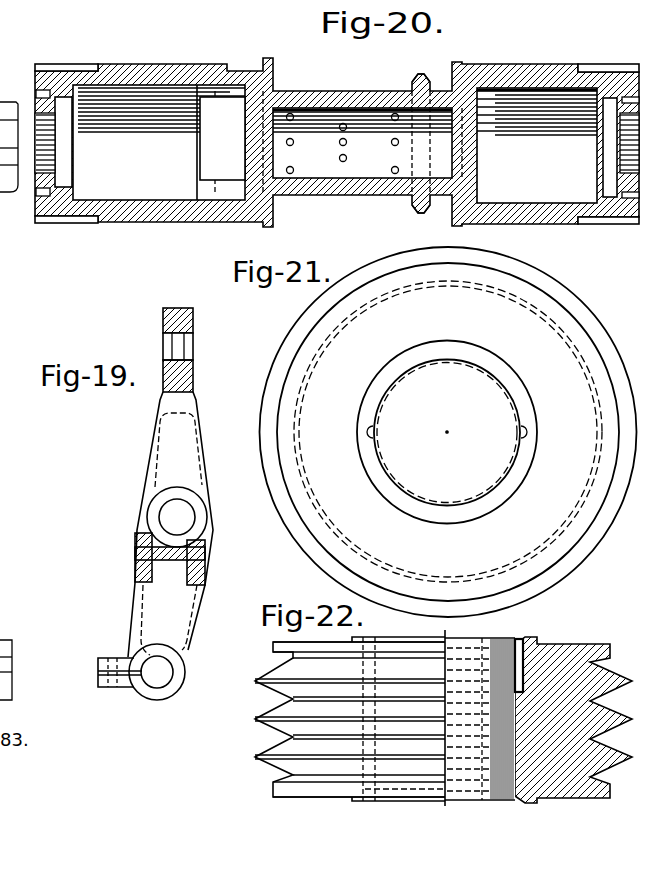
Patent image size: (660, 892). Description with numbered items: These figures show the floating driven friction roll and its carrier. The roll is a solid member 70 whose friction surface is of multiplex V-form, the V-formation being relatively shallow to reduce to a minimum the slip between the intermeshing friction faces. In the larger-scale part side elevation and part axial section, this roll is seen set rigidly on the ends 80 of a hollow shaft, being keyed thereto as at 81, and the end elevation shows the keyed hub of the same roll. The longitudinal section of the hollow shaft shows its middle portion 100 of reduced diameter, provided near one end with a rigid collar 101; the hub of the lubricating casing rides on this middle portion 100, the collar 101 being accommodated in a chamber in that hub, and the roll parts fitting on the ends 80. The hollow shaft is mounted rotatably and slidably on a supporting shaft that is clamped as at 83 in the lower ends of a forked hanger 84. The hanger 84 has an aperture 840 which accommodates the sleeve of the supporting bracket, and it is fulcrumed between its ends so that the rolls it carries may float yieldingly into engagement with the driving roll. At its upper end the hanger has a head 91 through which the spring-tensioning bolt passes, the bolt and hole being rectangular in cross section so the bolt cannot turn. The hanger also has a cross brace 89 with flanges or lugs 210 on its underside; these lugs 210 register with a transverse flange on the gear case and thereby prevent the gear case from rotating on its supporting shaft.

In FIG. 21, the solid member 70 is at (540, 357).
In FIG. 22, the solid member 70 is at (563, 670).
In FIG. 20, the hollow shaft ends 80 is at (122, 223).
In FIG. 20, the key 81 is at (54, 66).
In FIG. 21, the key 81 is at (368, 440).
In FIG. 22, the key 81 is at (375, 692).
In FIG. 19, the clamp 83 is at (108, 689).
In FIG. 19, the forked hanger 84 is at (174, 524).
In FIG. 19, the aperture 840 is at (188, 461).
In FIG. 19, the cross brace 89 is at (165, 563).
In FIG. 19, the head 91 is at (195, 370).
In FIG. 20, the middle portion 100 is at (343, 91).
In FIG. 20, the collar 101 is at (418, 209).
In FIG. 19, the flanges or lugs 210 is at (135, 566).